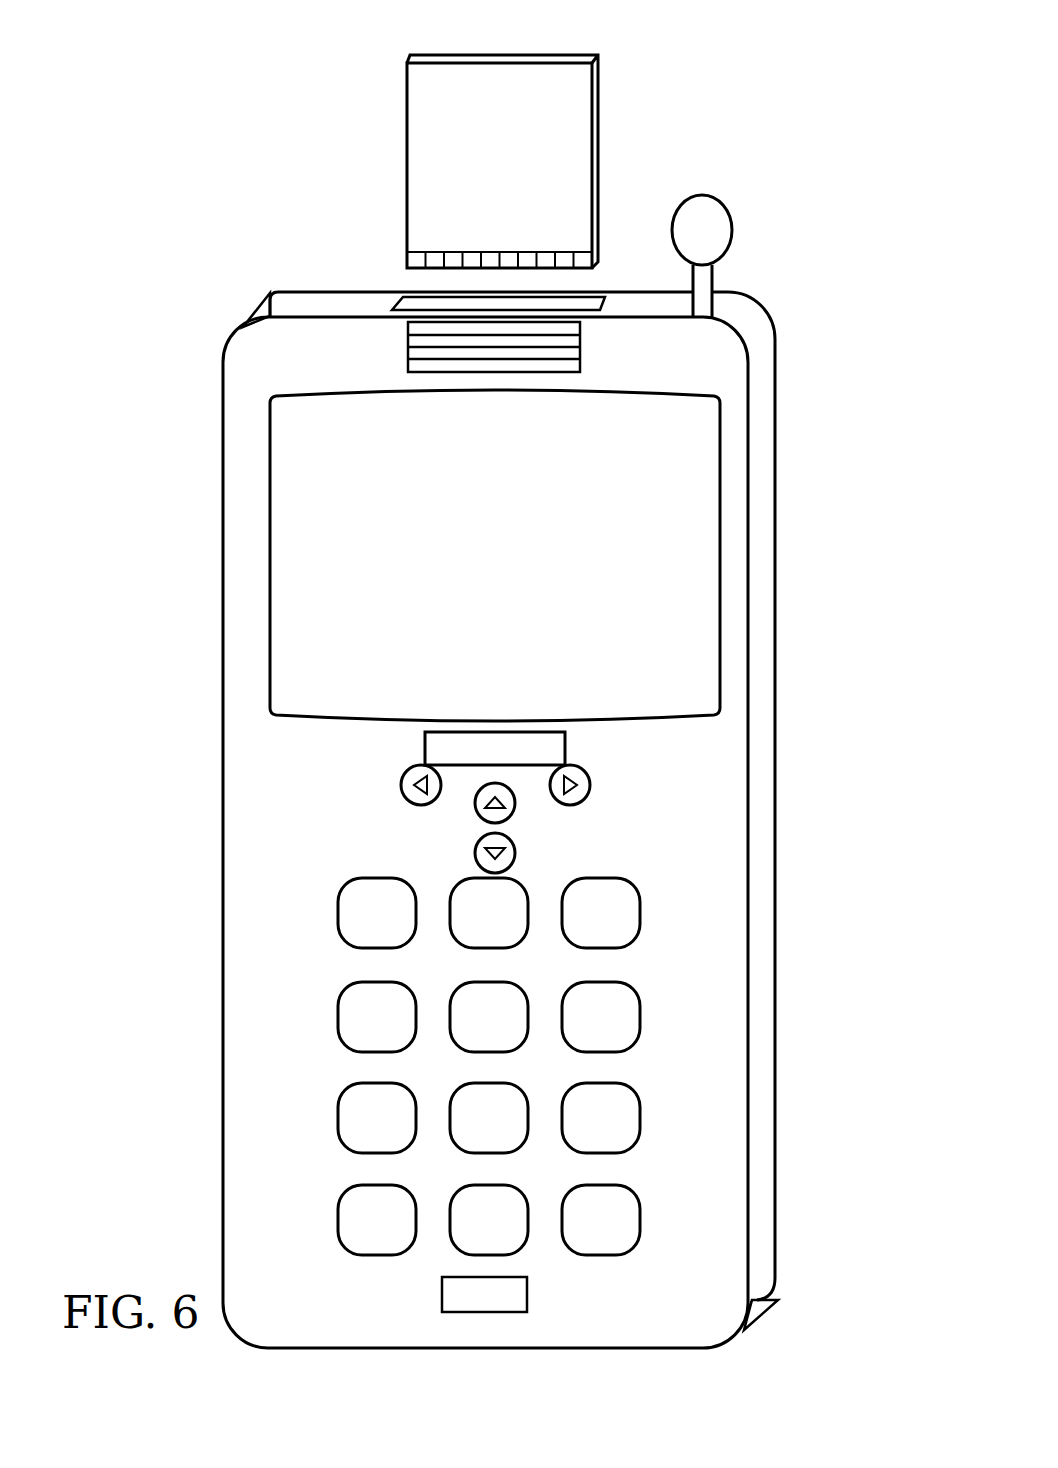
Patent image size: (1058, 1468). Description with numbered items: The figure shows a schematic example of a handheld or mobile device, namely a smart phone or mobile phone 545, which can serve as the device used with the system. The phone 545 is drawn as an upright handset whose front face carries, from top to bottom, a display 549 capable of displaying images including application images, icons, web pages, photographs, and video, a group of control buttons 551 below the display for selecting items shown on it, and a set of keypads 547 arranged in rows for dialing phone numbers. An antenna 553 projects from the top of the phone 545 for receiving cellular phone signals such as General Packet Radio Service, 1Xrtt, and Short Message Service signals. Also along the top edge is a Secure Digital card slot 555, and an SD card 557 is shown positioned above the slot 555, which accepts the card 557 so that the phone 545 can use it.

The smart phone or mobile phone 545 is at (219, 352).
The set of keypads 547 is at (670, 913).
The display 549 is at (719, 555).
The control buttons 551 is at (440, 812).
The antenna 553 is at (732, 240).
The Secure Digital (SD) card slot 555 is at (436, 305).
The SD card 557 is at (603, 122).